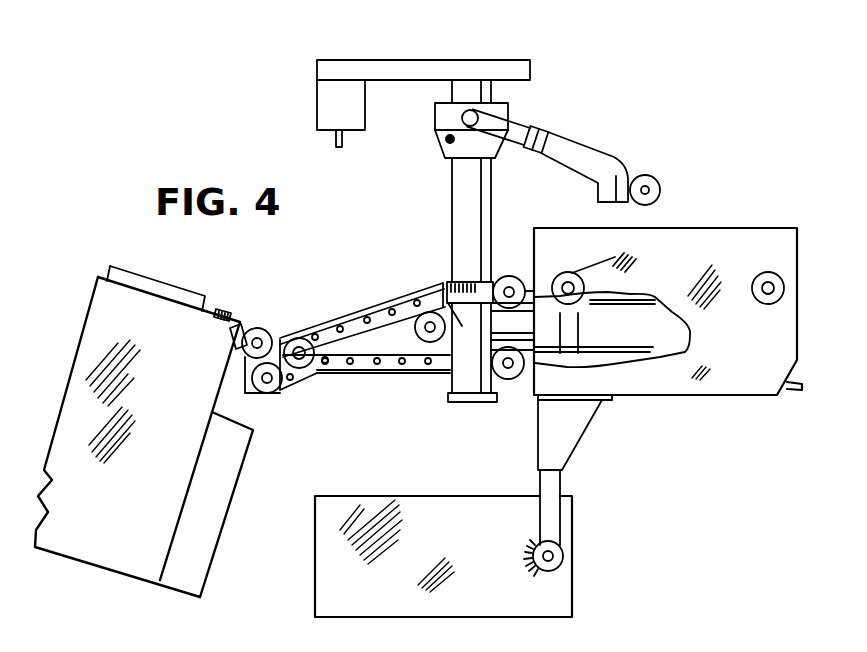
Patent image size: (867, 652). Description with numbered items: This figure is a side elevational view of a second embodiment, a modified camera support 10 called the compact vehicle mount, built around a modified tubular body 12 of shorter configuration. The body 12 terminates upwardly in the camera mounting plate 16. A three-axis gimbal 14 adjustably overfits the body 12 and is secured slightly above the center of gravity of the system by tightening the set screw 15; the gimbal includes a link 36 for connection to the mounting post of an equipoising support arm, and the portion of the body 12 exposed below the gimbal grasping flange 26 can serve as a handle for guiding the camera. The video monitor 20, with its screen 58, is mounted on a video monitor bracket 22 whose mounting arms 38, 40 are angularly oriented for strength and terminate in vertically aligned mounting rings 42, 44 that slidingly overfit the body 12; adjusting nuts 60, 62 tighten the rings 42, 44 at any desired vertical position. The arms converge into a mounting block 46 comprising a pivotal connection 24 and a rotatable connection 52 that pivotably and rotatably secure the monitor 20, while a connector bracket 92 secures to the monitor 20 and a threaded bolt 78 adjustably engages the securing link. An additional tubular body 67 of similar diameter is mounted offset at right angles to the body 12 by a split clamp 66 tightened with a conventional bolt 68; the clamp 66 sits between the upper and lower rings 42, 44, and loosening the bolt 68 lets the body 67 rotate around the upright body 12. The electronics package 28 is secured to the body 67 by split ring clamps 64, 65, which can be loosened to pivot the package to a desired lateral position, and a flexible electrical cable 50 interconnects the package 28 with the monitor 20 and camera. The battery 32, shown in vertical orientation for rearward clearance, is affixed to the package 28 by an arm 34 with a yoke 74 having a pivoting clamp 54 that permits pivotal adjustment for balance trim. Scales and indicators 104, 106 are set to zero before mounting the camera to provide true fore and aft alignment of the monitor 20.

The camera mounting plate 16 is at (513, 60).
The flexible electrical cable 50 is at (342, 148).
The modified tubular body 12 is at (476, 217).
The modified camera support 10 is at (452, 205).
The three-axis gimbal 14 is at (437, 135).
The set screw 15 is at (447, 145).
The gimbal grasping flange 26 is at (527, 120).
The link 36 is at (613, 152).
The scale and indicator 106 is at (447, 282).
The split clamp 66 is at (437, 303).
The video monitor bracket 22 is at (312, 329).
The mounting arm 38 is at (387, 300).
The mounting arm 40 is at (395, 374).
The mounting block 46 is at (308, 372).
The bolt 68 is at (414, 336).
The pivotal connection 24 is at (262, 340).
The rotatable connection 52 is at (268, 392).
The threaded bolt 78 is at (250, 383).
The connector bracket 92 is at (238, 322).
The screen 58 is at (185, 293).
The video monitor 20 is at (92, 363).
The mounting ring 42 is at (513, 267).
The adjusting nut 62 is at (511, 382).
The mounting ring 44 is at (448, 380).
The electronics package 28 is at (735, 382).
The adjusting nut 60 is at (566, 300).
The split ring clamp 64 is at (620, 256).
The split ring clamp 65 is at (757, 278).
The additional tubular body 67 is at (648, 337).
The arm 34 is at (576, 428).
The yoke 74 is at (550, 517).
The pivoting clamp 54 is at (562, 558).
The scale and indicator 104 is at (530, 553).
The battery 32 is at (330, 570).